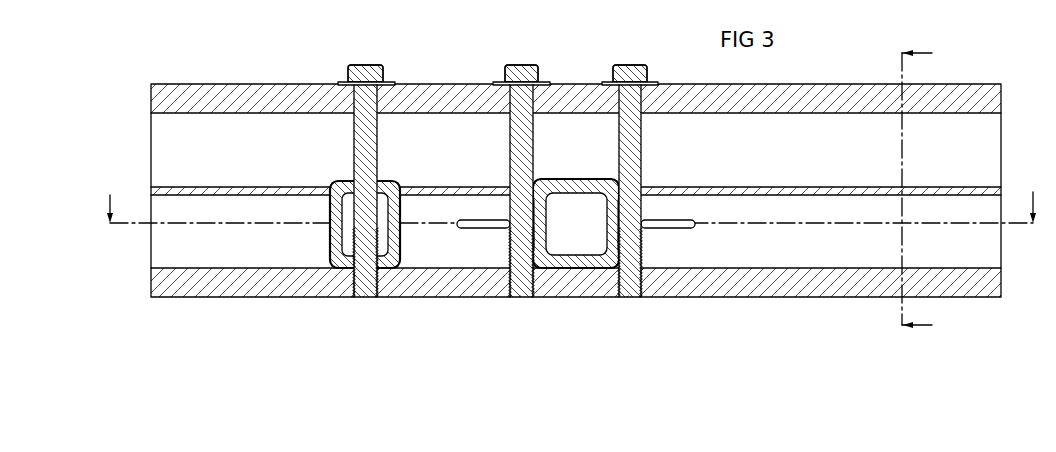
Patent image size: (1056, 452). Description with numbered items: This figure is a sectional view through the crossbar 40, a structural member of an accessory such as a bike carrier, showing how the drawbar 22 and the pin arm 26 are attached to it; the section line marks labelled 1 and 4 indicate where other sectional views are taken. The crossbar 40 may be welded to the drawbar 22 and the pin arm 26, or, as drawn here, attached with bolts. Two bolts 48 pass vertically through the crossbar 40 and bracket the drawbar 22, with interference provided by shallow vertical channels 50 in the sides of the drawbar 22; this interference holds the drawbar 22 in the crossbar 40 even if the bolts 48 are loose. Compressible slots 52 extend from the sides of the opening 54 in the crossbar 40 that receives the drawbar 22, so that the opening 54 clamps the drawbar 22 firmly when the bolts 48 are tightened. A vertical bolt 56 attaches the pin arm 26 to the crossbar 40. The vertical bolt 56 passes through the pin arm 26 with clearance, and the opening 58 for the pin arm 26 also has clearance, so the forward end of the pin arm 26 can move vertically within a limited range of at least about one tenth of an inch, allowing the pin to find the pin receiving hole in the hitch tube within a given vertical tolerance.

The section line 1- 1 is at (572, 194).
The section line 4- 4 is at (927, 190).
The drawbar 22 is at (571, 179).
The pin arm 26 is at (341, 181).
The crossbar 40 is at (213, 163).
The bolts 48 is at (514, 138).
The shallow vertical channels 50 is at (533, 240).
The compressible slots 52 is at (458, 221).
The opening 54 is at (594, 180).
The vertical bolt 56 is at (370, 143).
The opening for the pin arm 58 is at (338, 212).